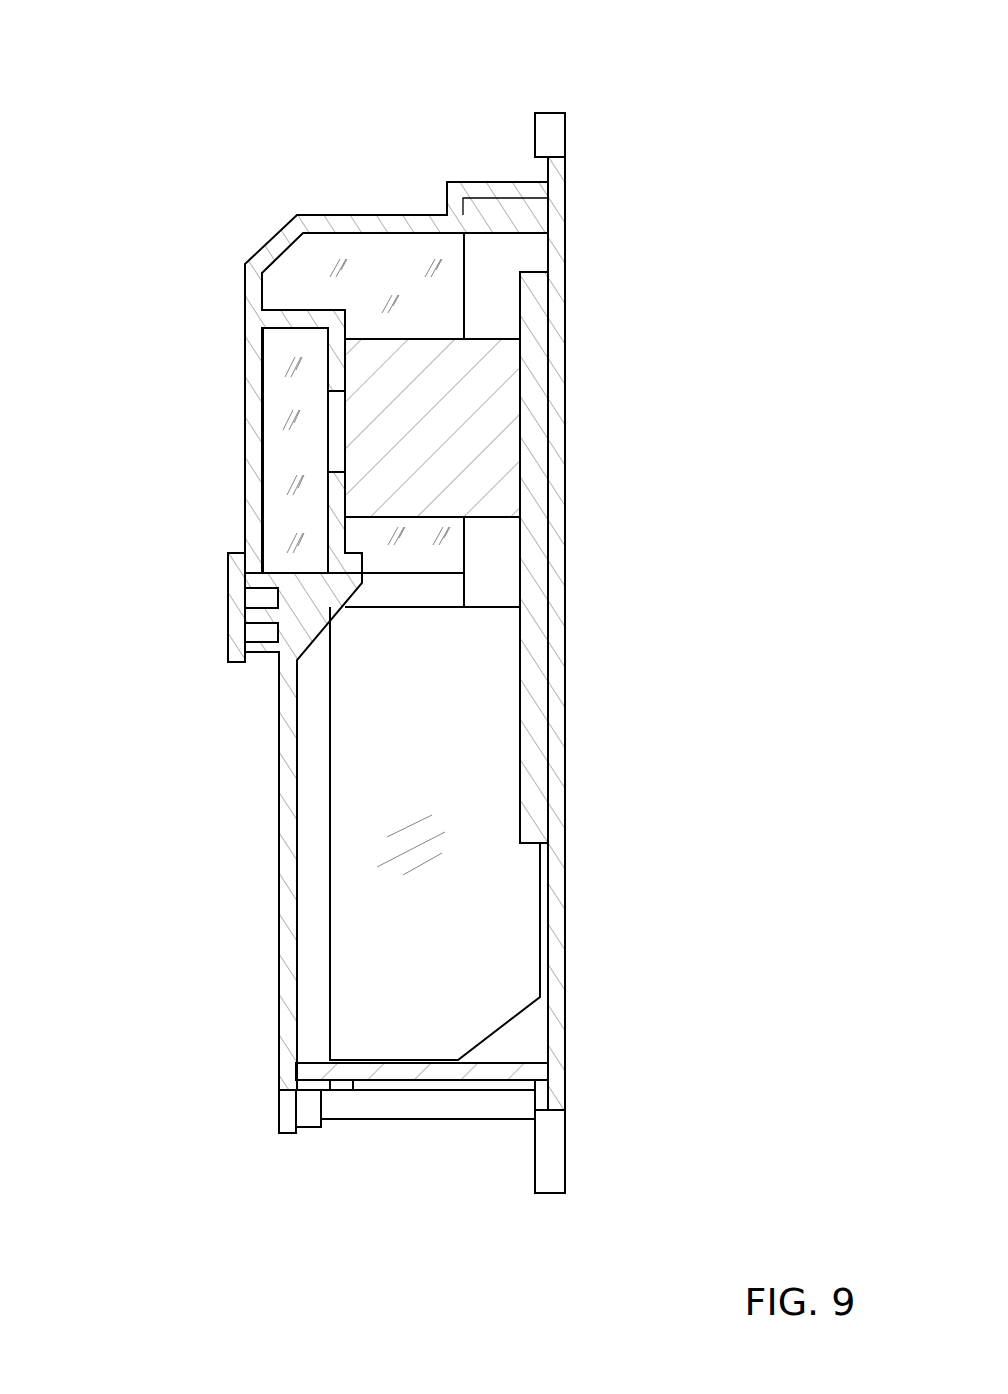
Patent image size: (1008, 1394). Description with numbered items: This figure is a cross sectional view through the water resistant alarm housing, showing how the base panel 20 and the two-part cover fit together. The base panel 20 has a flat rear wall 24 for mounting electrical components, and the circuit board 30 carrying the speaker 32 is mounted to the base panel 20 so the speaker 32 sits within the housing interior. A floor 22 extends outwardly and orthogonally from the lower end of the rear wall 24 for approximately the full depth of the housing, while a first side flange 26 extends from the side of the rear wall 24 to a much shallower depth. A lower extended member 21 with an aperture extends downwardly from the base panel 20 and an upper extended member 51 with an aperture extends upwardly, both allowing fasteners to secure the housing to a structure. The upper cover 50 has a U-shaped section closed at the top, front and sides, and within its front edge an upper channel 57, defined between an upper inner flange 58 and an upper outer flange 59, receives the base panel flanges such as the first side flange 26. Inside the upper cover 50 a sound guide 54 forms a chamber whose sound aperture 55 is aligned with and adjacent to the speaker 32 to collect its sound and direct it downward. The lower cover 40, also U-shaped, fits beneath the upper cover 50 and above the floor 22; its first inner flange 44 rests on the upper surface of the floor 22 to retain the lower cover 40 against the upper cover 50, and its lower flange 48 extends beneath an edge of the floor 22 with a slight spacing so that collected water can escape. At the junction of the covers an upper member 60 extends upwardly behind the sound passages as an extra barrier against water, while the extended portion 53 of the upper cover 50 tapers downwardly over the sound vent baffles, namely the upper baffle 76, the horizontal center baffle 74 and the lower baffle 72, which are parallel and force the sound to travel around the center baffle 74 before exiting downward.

The base panel 20 is at (583, 413).
The lower extended member 21 is at (553, 1193).
The floor 22 is at (408, 1072).
The rear wall 24 is at (565, 790).
The first side flange 26 is at (495, 247).
The circuit board 30 is at (537, 586).
The speaker 32 is at (475, 455).
The lower cover 40 is at (263, 968).
The first inner flange 44 is at (458, 937).
The lower flange 48 is at (312, 1085).
The upper cover 50 is at (268, 238).
The upper extended member 51 is at (550, 112).
The extended portion 53 is at (240, 635).
The sound guide 54 is at (273, 360).
The sound aperture 55 is at (335, 432).
The upper channel 57 is at (475, 209).
The upper inner flange 58 is at (523, 222).
The upper outer flange 59 is at (503, 192).
The upper member 60 is at (318, 606).
The lower baffle 72 is at (262, 652).
The center baffle 74 is at (253, 617).
The upper baffle 76 is at (260, 582).